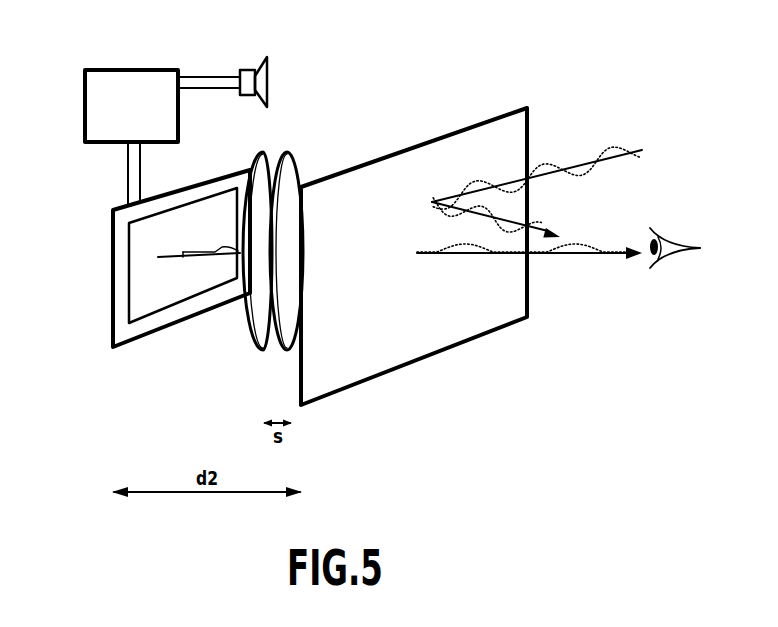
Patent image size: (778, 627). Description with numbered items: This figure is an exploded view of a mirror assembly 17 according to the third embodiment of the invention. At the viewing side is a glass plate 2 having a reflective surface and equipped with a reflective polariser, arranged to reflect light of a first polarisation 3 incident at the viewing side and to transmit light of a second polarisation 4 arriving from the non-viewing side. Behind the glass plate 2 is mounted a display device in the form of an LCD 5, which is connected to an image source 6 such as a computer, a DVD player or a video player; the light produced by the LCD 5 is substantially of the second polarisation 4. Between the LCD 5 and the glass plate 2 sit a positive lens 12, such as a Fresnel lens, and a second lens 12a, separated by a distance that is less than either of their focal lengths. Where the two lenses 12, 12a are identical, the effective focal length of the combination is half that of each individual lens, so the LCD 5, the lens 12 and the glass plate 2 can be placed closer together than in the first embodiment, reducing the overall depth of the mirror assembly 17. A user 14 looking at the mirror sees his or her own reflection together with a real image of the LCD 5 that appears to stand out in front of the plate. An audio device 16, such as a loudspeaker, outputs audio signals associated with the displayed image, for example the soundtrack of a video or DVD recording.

The glass plate 2 is at (487, 133).
The light of a first polarisation 3 is at (627, 146).
The light of a second polarisation 4 is at (600, 256).
The LCD 5 is at (120, 243).
The image source 6 is at (92, 105).
The positive lens 12 is at (262, 151).
The second lens 12a is at (296, 152).
The user 14 is at (666, 268).
The audio device 16 is at (246, 70).
The mirror assembly 17 is at (614, 28).